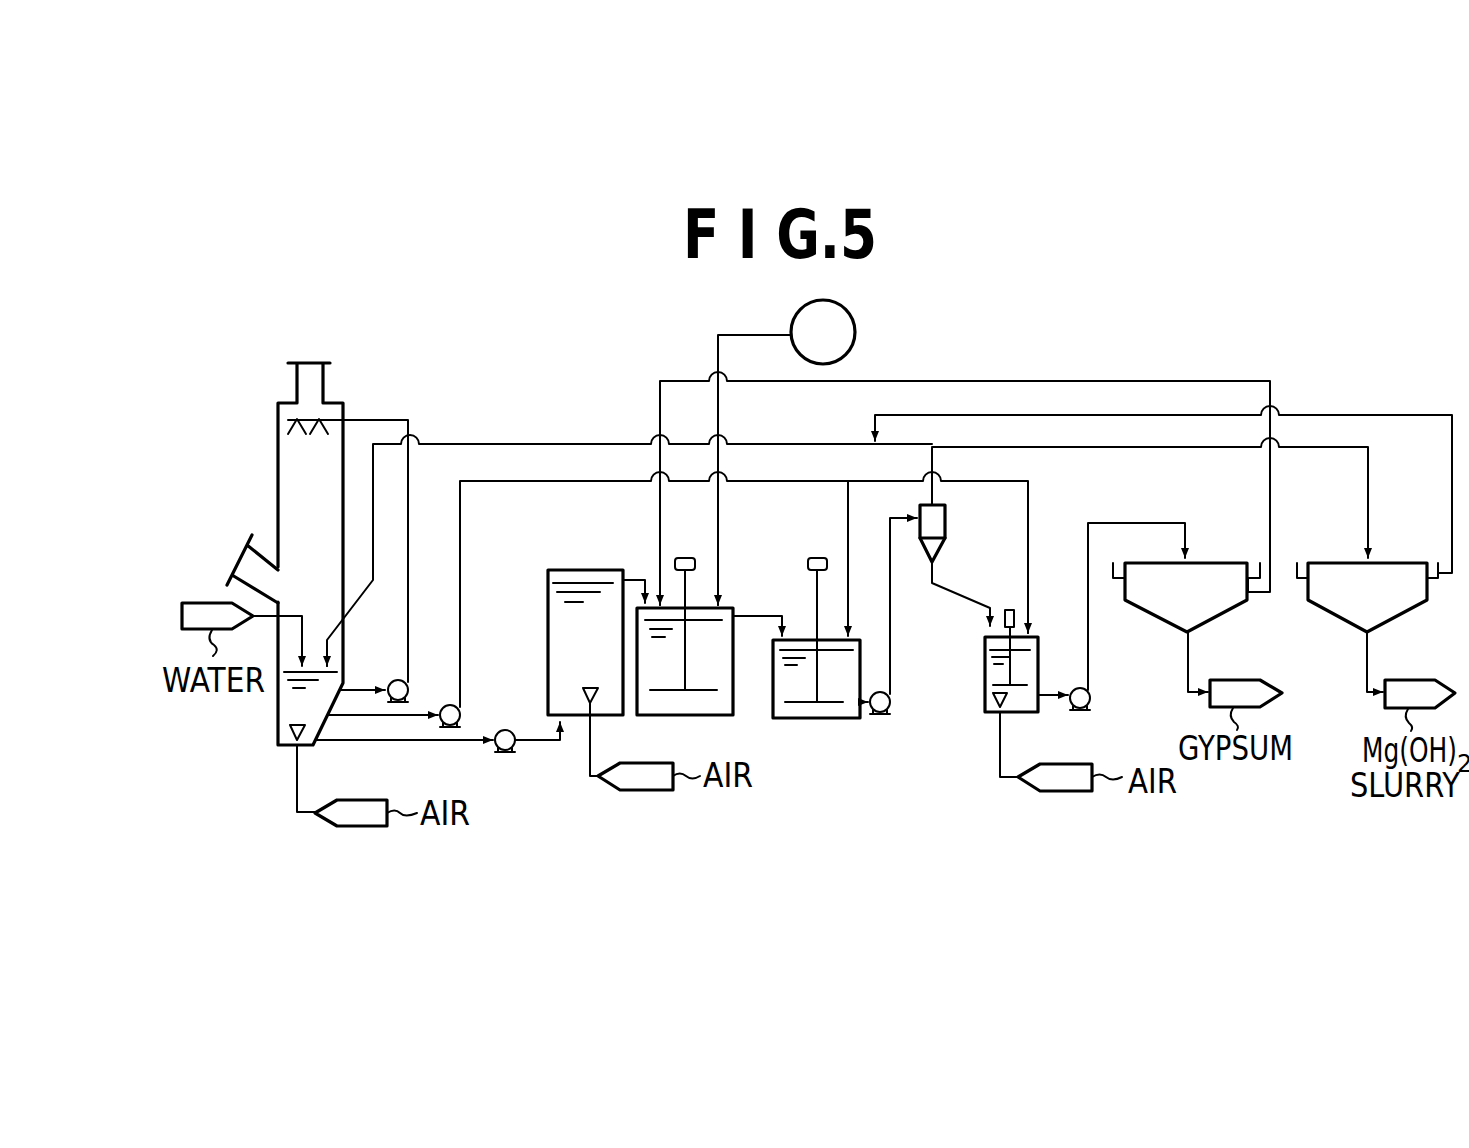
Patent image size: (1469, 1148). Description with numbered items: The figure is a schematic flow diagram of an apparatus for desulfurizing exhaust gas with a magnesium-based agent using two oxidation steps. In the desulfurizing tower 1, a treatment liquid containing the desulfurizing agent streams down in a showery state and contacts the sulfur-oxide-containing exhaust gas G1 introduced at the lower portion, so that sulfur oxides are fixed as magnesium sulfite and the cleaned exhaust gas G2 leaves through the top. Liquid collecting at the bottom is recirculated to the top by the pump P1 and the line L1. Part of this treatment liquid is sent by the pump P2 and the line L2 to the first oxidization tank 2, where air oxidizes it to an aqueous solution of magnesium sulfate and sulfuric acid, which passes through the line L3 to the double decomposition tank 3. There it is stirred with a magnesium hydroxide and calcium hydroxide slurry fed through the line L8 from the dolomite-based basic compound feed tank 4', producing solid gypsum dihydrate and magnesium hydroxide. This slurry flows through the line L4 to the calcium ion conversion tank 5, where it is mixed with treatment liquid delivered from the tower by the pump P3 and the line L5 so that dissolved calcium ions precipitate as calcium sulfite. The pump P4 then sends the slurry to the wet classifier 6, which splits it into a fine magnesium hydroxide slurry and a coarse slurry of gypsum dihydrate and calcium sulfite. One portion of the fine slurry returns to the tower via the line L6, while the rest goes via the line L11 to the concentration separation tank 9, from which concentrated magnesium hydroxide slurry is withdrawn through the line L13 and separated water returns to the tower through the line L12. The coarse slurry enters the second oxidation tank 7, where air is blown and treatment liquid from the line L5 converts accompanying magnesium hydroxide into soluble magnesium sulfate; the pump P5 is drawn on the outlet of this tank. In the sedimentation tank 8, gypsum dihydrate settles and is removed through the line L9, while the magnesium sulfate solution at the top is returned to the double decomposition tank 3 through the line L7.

The desulfurizing tower 1 is at (342, 402).
The first oxidization tank 2 is at (600, 568).
The double decomposition tank 3 is at (730, 605).
The dolomite-based basic compound feed tank 4' is at (852, 326).
The calcium ion conversion tank 5 is at (860, 640).
The wet classifier 6 is at (948, 512).
The second oxidation tank 7 is at (1038, 645).
The sedimentation tank 8 is at (1222, 562).
The concentration separation tank 9 is at (1408, 562).
The pump P1 is at (391, 691).
The pump P2 is at (524, 758).
The pump P3 is at (411, 710).
The pump P4 is at (893, 622).
The pump P5 is at (1111, 622).
The line L1 is at (364, 551).
The line L2 is at (441, 758).
The line L3 is at (640, 578).
The line L4 is at (759, 609).
The line L5 is at (744, 577).
The line L6 is at (629, 539).
The line L7 is at (965, 477).
The line L8 is at (754, 453).
The line L9 is at (1209, 661).
The line L11 is at (1150, 487).
The line L12 is at (1163, 477).
The line L13 is at (1390, 662).
The exhaust gas G1 is at (232, 553).
The exhaust gas G2 is at (309, 355).